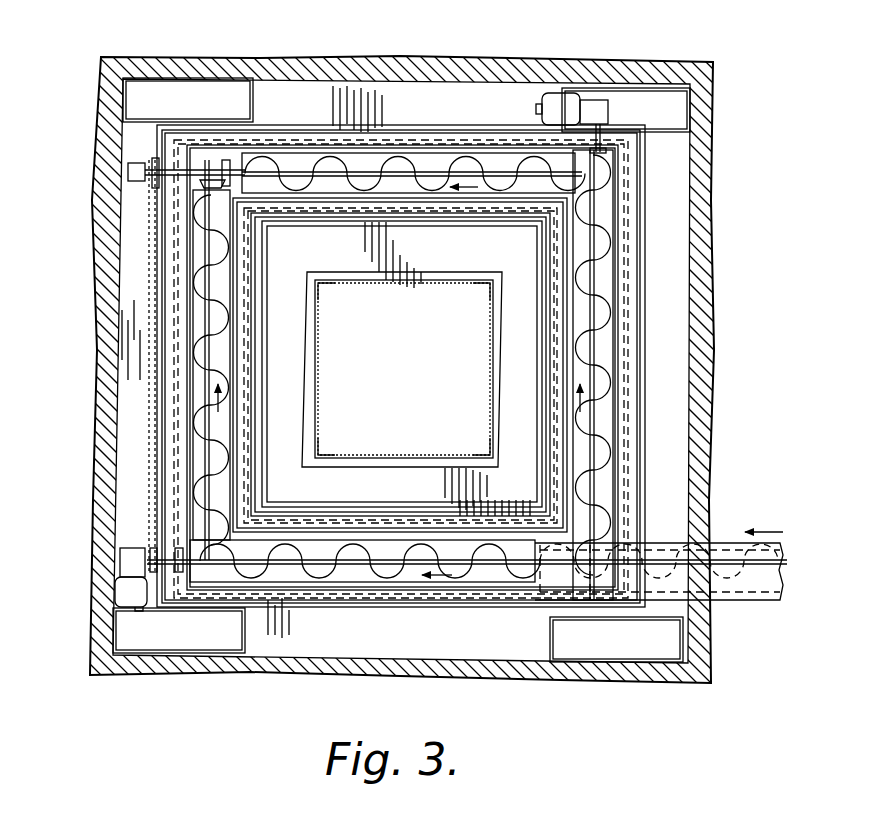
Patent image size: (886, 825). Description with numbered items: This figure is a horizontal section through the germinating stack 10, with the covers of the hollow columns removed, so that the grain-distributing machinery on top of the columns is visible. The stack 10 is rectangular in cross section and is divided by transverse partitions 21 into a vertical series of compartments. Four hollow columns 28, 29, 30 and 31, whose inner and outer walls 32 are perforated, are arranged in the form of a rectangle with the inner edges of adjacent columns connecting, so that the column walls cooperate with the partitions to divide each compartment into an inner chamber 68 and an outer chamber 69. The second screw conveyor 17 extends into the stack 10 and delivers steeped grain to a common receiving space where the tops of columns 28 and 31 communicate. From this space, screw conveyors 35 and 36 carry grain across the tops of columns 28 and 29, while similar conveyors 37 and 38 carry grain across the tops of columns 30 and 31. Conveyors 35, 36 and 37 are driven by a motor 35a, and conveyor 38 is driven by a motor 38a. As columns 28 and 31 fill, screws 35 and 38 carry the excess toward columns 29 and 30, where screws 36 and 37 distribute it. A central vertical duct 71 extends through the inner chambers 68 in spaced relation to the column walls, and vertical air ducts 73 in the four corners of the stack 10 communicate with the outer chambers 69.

The stack 10 is at (318, 100).
The second screw conveyor 17 is at (760, 598).
The transverse partition 21 is at (685, 195).
The hollow column 28 is at (290, 572).
The hollow column 29 is at (205, 290).
The hollow column 30 is at (355, 160).
The hollow column 31 is at (600, 293).
The inner and outer walls 32 is at (557, 330).
The screw conveyor 35 is at (382, 578).
The motor 35a is at (128, 592).
The screw conveyor 36 is at (200, 390).
The screw conveyor 37 is at (460, 163).
The screw conveyor 38 is at (600, 400).
The motor 38a is at (553, 95).
The inner chamber 68 is at (300, 345).
The outer chamber 69 is at (133, 228).
The central vertical duct 71 is at (445, 293).
The vertical air duct 73 is at (130, 92).